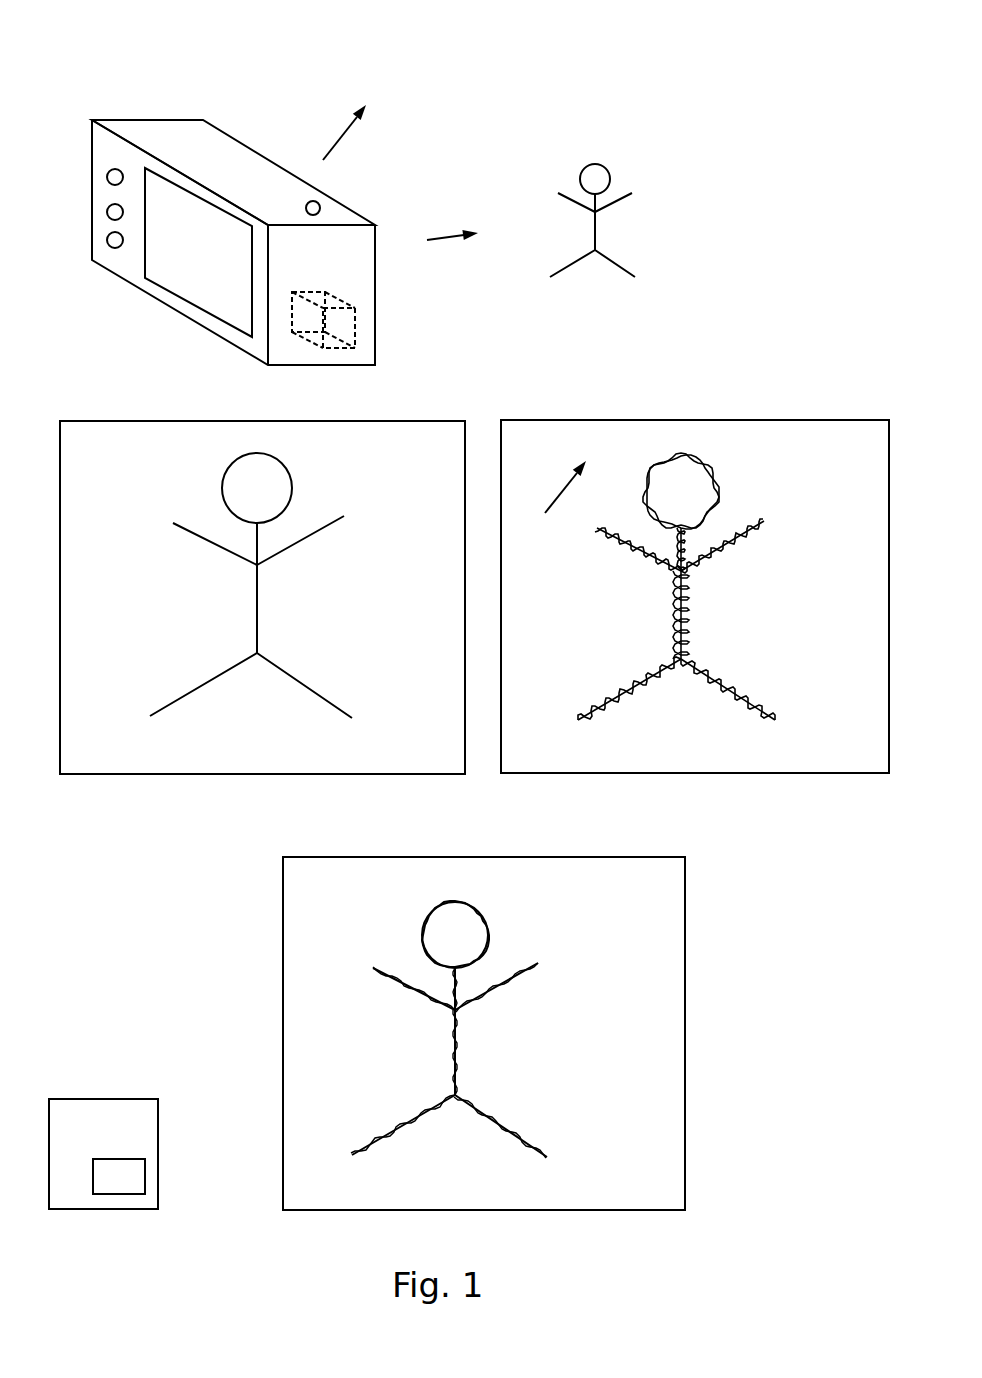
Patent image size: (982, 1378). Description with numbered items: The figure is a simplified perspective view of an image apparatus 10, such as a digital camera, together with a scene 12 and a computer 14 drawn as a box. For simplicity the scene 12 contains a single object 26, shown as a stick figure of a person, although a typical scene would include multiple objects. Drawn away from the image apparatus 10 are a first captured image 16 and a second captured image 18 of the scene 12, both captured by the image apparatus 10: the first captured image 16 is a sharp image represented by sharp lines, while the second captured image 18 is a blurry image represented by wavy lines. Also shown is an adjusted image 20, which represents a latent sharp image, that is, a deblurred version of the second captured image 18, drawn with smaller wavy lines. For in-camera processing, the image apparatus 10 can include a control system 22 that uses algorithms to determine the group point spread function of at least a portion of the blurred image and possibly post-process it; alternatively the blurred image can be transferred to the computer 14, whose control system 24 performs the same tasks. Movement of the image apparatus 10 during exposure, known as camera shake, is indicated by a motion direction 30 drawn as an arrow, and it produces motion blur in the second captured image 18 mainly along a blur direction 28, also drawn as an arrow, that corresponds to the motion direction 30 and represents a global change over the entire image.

The image apparatus 10 is at (195, 128).
The scene 12 is at (389, 257).
The computer 14 is at (77, 1140).
The first captured image 16 is at (114, 789).
The second captured image 18 is at (812, 789).
The adjusted image 20 is at (266, 1011).
The control system 22 is at (343, 330).
The control system 24 is at (102, 1191).
The object 26 is at (579, 239).
The blur direction 28 is at (559, 495).
The motion direction 30 is at (339, 141).